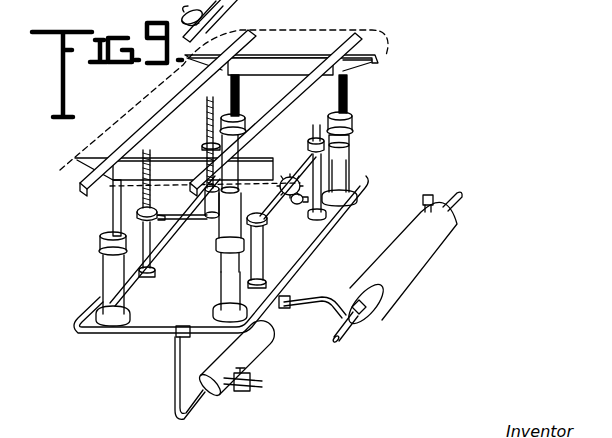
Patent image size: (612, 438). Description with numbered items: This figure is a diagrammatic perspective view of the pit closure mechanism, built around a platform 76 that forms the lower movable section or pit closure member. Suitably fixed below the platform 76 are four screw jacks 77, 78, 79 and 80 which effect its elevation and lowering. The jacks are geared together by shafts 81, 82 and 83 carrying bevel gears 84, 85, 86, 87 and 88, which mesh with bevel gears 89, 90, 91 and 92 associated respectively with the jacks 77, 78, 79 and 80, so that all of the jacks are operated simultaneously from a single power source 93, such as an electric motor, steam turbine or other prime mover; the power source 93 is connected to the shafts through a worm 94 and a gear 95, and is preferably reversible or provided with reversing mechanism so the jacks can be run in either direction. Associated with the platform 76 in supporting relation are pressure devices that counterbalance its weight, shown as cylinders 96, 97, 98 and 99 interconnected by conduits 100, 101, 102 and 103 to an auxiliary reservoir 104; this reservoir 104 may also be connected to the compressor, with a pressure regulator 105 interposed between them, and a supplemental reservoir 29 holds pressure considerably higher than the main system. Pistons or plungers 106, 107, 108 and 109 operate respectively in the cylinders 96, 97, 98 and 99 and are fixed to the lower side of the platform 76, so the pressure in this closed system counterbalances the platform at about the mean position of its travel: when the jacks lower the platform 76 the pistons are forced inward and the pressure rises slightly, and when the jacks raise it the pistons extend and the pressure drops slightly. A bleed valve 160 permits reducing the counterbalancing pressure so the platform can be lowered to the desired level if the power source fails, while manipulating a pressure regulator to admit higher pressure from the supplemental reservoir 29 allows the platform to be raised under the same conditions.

The supplemental reservoir 29 is at (416, 262).
The platform 76 is at (330, 32).
The screw jack 77 is at (150, 262).
The screw jack 78 is at (263, 248).
The screw jack 79 is at (223, 135).
The screw jack 80 is at (340, 112).
The shaft 81 is at (198, 224).
The shaft 82 is at (272, 201).
The shaft 83 is at (309, 146).
The bevel gear 84 is at (149, 214).
The bevel gear 85 is at (222, 270).
The bevel gear 86 is at (350, 165).
The bevel gear 87 is at (309, 154).
The bevel gear 88 is at (246, 122).
The bevel gear 89 is at (137, 212).
The bevel gear 90 is at (261, 232).
The bevel gear 91 is at (351, 133).
The bevel gear 92 is at (207, 160).
The power source 93 is at (224, 243).
The worm 94 is at (346, 211).
The gear 95 is at (304, 188).
The cylinder 96 is at (103, 265).
The cylinder 97 is at (227, 295).
The cylinder 98 is at (177, 137).
The cylinder 99 is at (351, 150).
The conduit 100 is at (120, 332).
The conduit 101 is at (314, 247).
The conduit 102 is at (100, 245).
The conduit 103 is at (175, 383).
The auxiliary reservoir 104 is at (245, 356).
The pressure regulator 105 is at (288, 318).
The piston 106 is at (113, 197).
The piston 107 is at (210, 226).
The piston 108 is at (241, 90).
The piston 109 is at (348, 88).
The bleed valve 160 is at (183, 15).